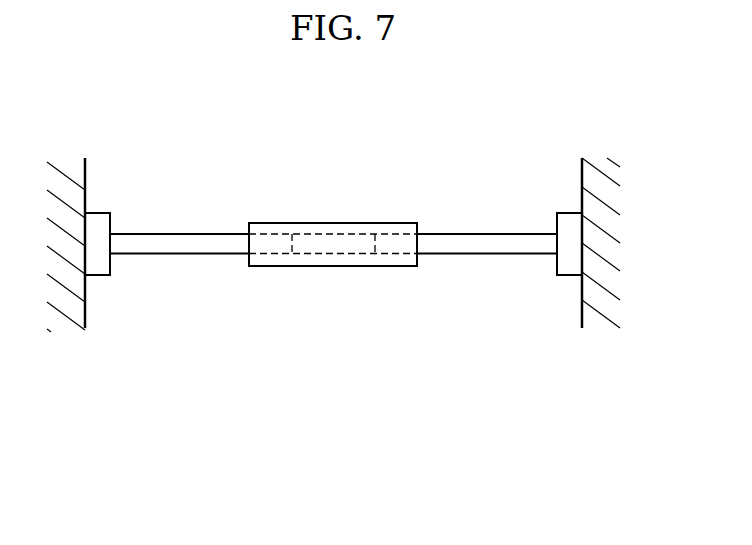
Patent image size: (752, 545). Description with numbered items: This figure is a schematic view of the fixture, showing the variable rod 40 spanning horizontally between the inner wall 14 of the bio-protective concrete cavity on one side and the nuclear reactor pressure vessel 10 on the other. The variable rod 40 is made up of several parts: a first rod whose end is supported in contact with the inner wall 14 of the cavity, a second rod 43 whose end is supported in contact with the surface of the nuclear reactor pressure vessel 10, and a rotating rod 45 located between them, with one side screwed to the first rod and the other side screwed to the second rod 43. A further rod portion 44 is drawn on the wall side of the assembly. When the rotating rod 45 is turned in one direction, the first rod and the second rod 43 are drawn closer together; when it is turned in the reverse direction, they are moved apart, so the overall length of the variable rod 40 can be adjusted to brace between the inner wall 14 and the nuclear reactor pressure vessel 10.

The nuclear reactor pressure vessel 10 is at (606, 273).
The inner wall 14 is at (85, 297).
The variable rod 40 is at (346, 312).
The second rod 43 is at (483, 254).
The first rod portion 44 is at (177, 254).
The rotating rod 45 is at (333, 297).